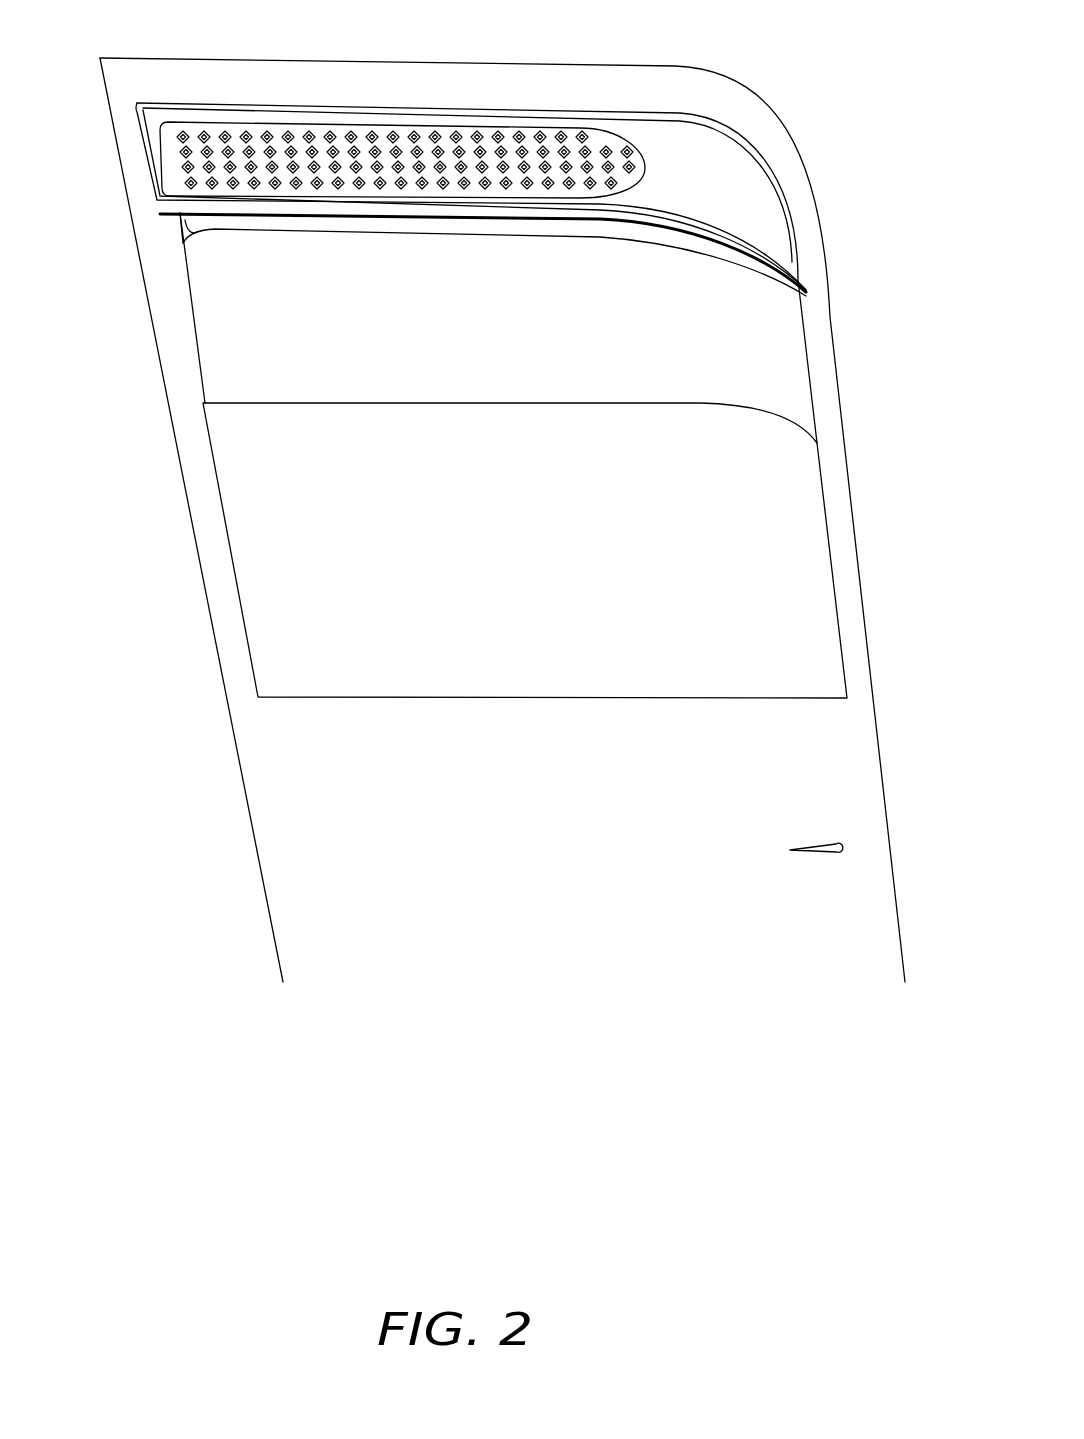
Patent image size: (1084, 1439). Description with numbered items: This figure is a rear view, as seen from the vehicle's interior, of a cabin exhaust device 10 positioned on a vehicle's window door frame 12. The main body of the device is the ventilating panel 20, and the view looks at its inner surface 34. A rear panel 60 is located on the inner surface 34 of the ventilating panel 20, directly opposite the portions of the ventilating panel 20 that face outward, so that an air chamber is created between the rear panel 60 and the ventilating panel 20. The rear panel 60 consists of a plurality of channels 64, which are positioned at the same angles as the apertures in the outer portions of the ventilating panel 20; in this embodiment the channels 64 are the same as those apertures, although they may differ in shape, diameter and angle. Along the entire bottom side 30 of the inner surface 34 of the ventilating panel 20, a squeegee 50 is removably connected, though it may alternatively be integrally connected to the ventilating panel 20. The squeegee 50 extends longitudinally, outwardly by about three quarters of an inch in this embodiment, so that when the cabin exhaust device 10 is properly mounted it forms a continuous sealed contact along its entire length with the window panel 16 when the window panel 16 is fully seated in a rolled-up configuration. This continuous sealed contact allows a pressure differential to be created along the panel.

The cabin exhaust device 10 is at (498, 258).
The window door frame 12 is at (540, 88).
The window panel 16 is at (780, 540).
The ventilating panel 20 is at (717, 142).
The bottom side 30 is at (753, 223).
The inner surface 34 is at (665, 137).
The squeegee 50 is at (792, 245).
The rear panel 60 is at (175, 155).
The channels 64 is at (277, 137).